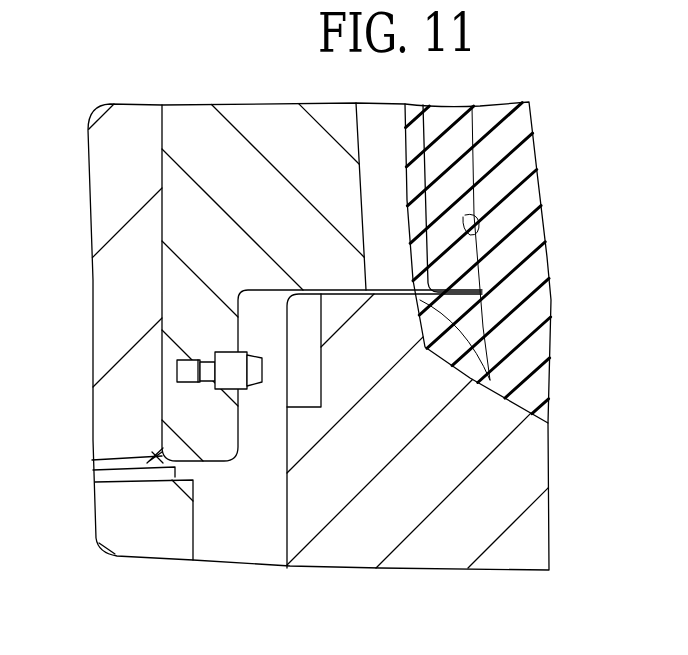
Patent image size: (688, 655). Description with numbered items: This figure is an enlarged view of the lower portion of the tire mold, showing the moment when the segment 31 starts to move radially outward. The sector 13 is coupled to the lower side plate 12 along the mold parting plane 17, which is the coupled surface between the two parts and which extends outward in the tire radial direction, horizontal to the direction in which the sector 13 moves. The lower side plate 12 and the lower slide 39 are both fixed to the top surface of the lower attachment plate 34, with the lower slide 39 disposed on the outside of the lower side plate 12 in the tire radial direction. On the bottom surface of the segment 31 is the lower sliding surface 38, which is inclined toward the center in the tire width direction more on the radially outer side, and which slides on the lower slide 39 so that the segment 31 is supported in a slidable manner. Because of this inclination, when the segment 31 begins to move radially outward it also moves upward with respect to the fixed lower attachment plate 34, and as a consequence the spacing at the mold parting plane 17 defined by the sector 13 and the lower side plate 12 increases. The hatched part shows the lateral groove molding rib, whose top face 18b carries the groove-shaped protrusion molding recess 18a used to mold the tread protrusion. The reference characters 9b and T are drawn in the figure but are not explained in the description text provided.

The sector 13 is at (200, 163).
The segment 31 is at (115, 228).
The mold parting plane 17 is at (240, 293).
The lower slide 39 is at (160, 452).
The lower sliding surface 38 is at (108, 470).
The lower attachment plate 34 is at (145, 527).
The protrusion molding recess 18a is at (425, 168).
The cutting edge 9b is at (477, 210).
The tool T is at (537, 272).
The top face 18b is at (495, 348).
The lower side plate 12 is at (497, 512).